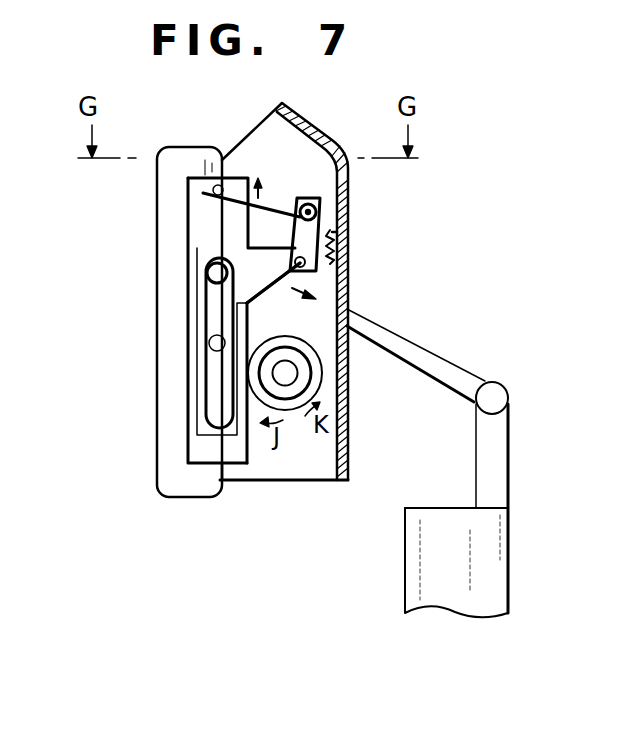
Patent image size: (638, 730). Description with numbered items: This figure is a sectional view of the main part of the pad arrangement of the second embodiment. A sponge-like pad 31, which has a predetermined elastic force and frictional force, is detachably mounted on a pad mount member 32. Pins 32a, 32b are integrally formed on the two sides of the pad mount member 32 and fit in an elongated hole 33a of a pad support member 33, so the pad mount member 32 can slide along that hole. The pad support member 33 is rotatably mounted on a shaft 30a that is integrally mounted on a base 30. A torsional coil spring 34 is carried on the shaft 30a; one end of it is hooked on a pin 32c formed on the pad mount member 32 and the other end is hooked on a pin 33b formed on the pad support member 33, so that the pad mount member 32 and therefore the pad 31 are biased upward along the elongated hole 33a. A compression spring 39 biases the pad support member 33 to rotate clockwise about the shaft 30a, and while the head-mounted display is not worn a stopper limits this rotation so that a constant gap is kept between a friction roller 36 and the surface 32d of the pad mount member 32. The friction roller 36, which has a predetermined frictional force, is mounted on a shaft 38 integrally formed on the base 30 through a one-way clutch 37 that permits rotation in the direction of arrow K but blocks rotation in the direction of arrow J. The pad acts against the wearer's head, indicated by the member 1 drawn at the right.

The paper / recording sheet 1 is at (478, 563).
The base 30 is at (340, 132).
The shaft 30a is at (328, 232).
The pad 31 is at (172, 238).
The pad mount member 32 is at (200, 452).
The pin 32a is at (210, 273).
The pin 32b is at (209, 343).
The pin 32c is at (210, 190).
The surface of the pad mount member 32d is at (252, 420).
The pad support member 33 is at (235, 435).
The elongated hole 33a is at (213, 410).
The pin 33b is at (307, 273).
The torsional coil spring 34 is at (273, 208).
The friction roller 36 is at (310, 387).
The one-way clutch 37 is at (287, 360).
The shaft 38 is at (292, 370).
The compression spring 39 is at (332, 247).